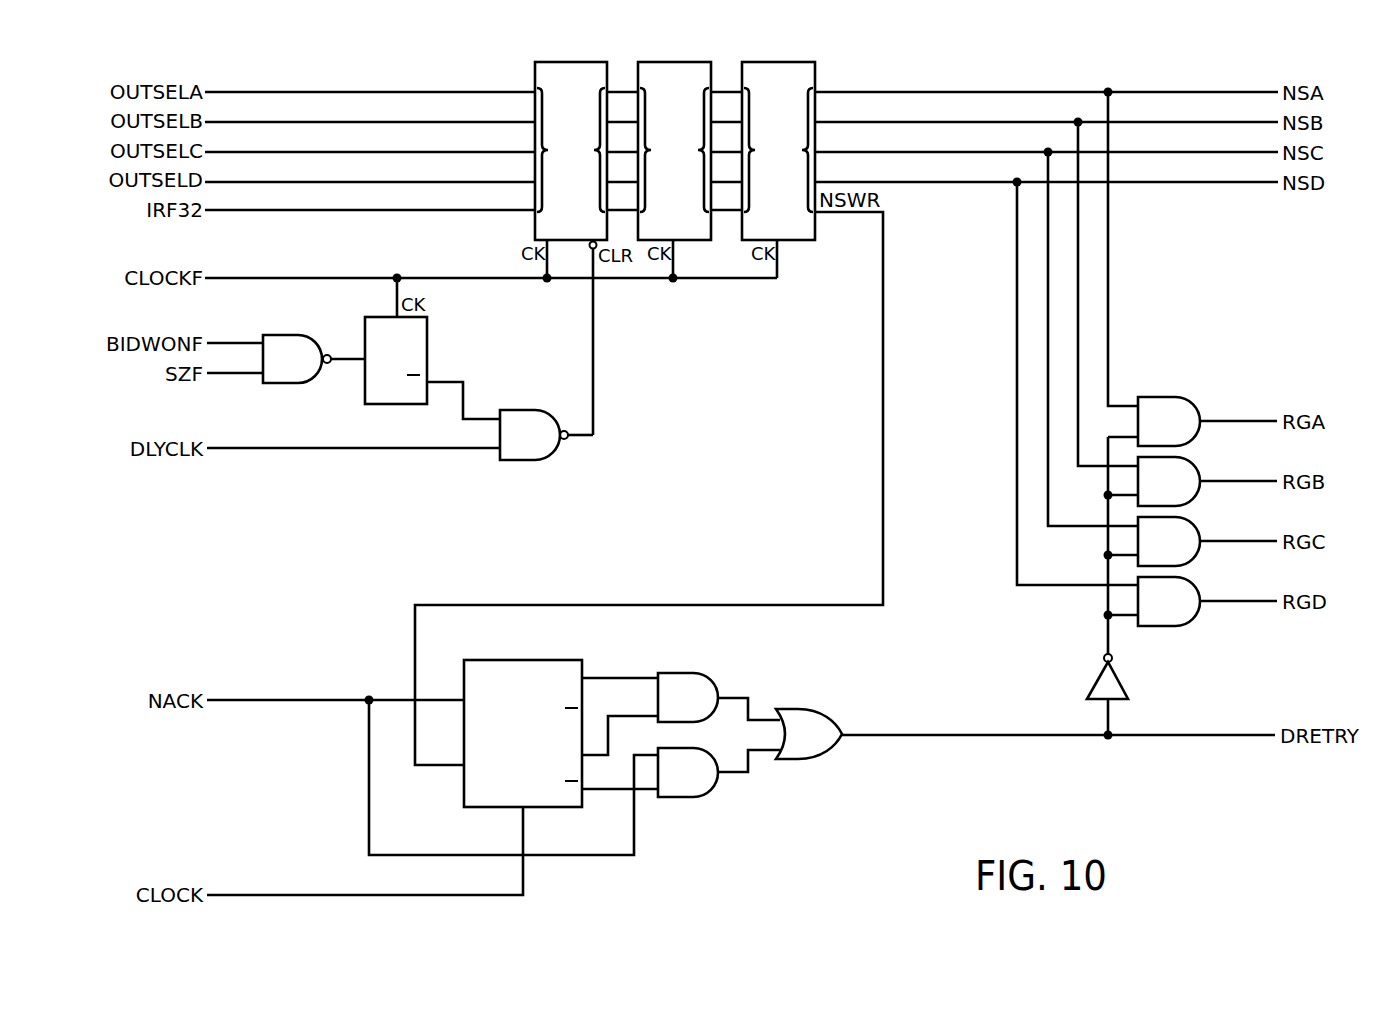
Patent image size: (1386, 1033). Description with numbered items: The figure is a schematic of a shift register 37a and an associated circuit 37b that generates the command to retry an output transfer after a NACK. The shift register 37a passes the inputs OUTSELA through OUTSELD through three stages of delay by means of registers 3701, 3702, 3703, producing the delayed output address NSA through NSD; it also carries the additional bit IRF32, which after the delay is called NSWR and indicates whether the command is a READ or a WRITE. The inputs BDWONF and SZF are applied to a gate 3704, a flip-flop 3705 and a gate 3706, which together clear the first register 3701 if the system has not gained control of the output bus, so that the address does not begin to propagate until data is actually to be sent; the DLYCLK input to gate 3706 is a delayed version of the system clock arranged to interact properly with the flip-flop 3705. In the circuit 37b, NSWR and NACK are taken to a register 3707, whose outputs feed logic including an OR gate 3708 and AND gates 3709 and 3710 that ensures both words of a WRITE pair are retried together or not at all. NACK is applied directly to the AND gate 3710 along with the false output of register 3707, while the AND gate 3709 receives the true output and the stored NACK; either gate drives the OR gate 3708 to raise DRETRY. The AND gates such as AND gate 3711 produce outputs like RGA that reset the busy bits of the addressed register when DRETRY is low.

The first register 3701 is at (568, 61).
The register 3702 is at (675, 61).
The register 3703 is at (781, 61).
The gate 3704 is at (288, 334).
The flip-flop 3705 is at (427, 323).
The gate 3706 is at (527, 409).
The register 3707 is at (535, 659).
The OR gate 3708 is at (807, 709).
The AND gate 3709 is at (690, 672).
The AND gate 3710 is at (695, 798).
The AND gate 3711 is at (1166, 396).
The shift register 37a is at (669, 345).
The associated circuit 37b is at (763, 496).